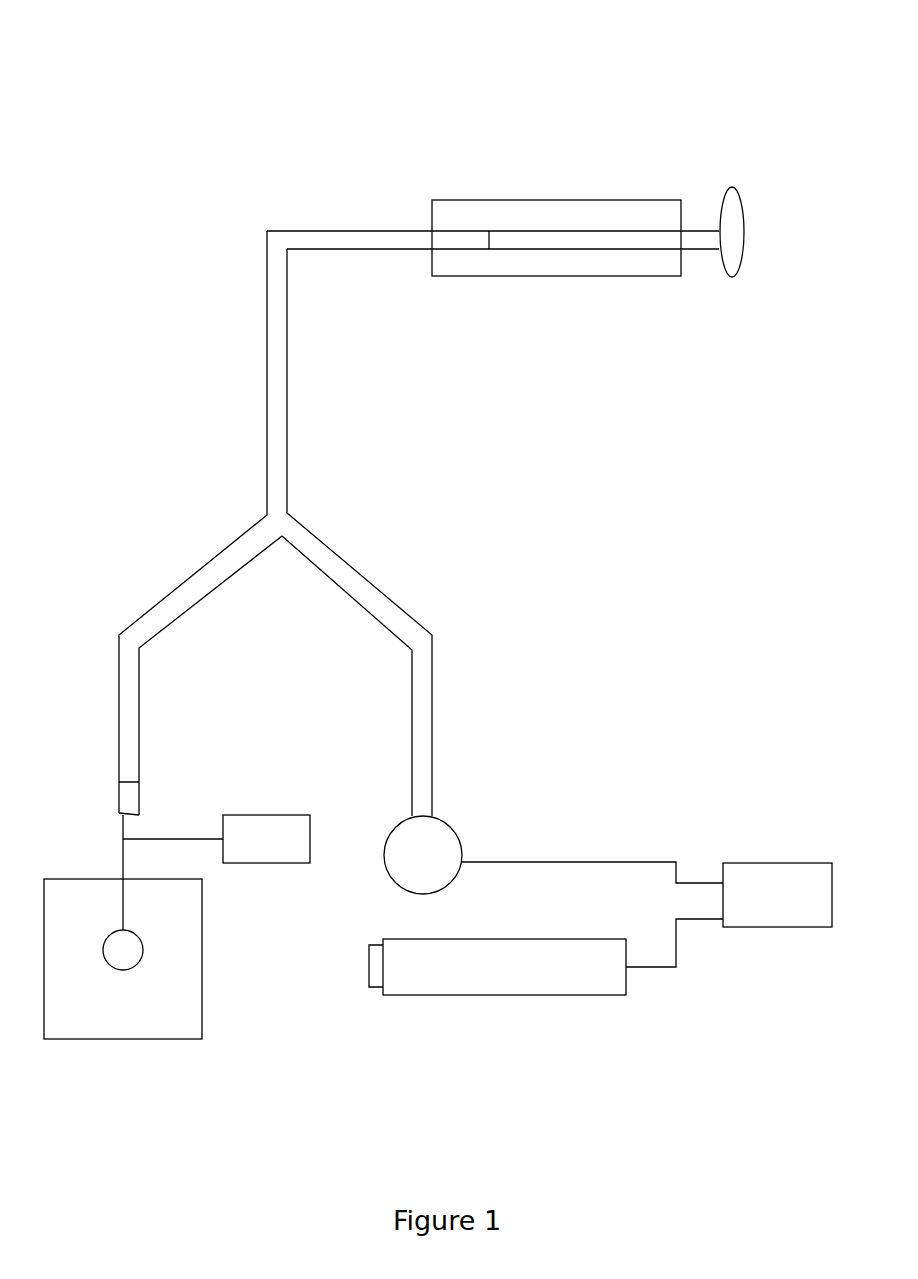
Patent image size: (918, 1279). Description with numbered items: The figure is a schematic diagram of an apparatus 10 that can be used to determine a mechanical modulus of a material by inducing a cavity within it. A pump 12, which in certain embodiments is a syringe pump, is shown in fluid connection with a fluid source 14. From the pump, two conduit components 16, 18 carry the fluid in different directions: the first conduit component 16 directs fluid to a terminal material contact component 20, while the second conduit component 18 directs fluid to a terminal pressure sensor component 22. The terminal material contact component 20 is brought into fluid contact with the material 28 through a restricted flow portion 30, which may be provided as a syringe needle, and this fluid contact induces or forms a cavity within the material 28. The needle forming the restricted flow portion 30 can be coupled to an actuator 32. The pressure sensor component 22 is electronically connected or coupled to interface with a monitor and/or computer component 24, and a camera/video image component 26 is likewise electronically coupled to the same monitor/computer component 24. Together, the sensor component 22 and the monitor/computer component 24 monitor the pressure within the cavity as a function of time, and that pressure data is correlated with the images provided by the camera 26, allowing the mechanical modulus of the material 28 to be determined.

The apparatus 10 is at (353, 123).
The pump 12 is at (587, 276).
The fluid source 14 is at (857, 228).
The conduit component 16 is at (217, 555).
The conduit component 18 is at (367, 578).
The terminal material contact component 20 is at (138, 801).
The terminal pressure sensor component 22 is at (435, 815).
The monitor/computer component 24 is at (777, 863).
The camera/video image component 26 is at (548, 995).
The material 28 is at (202, 928).
The restricted flow portion 30 is at (122, 860).
The actuator 32 is at (268, 815).